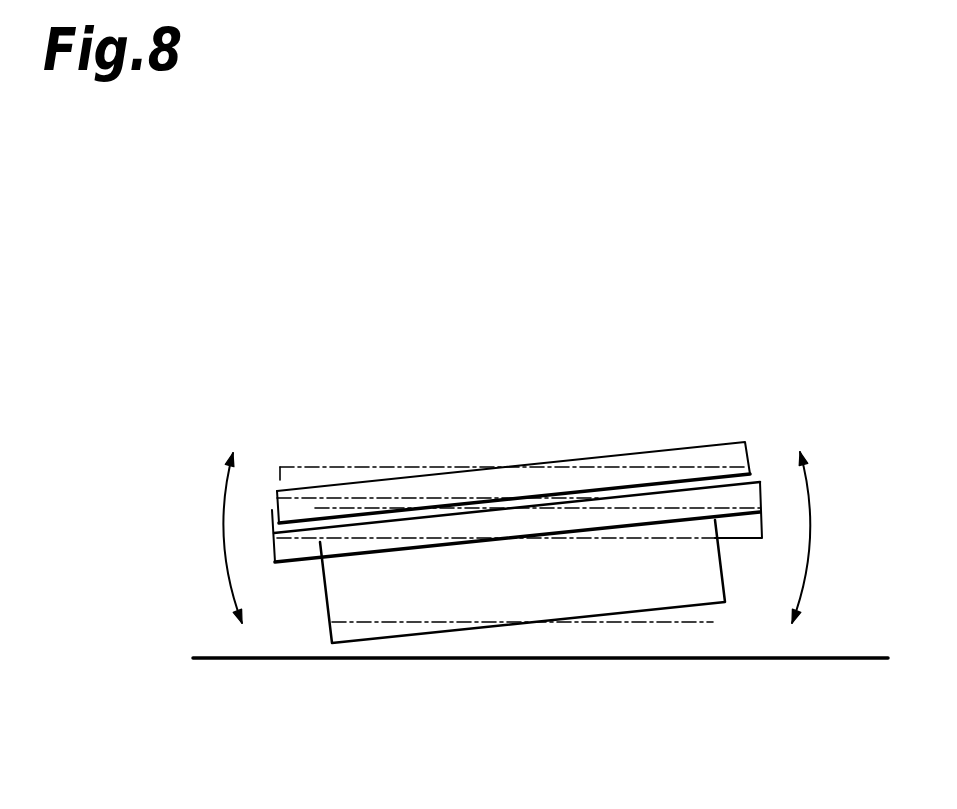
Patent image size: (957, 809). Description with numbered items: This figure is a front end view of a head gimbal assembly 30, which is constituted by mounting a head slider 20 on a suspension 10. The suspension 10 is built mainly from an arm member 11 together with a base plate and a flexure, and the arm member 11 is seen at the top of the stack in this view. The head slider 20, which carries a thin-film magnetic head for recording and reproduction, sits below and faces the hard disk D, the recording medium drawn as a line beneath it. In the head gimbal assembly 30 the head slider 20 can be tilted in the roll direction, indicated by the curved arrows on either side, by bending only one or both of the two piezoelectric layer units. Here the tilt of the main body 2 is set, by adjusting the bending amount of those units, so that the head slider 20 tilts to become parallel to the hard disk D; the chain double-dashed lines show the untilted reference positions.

The head gimbal assembly 30 is at (297, 350).
The arm member 11 is at (715, 457).
The suspension 10 is at (760, 465).
The main body 2 is at (273, 566).
The head slider 20 is at (682, 582).
The hard disk D is at (858, 657).